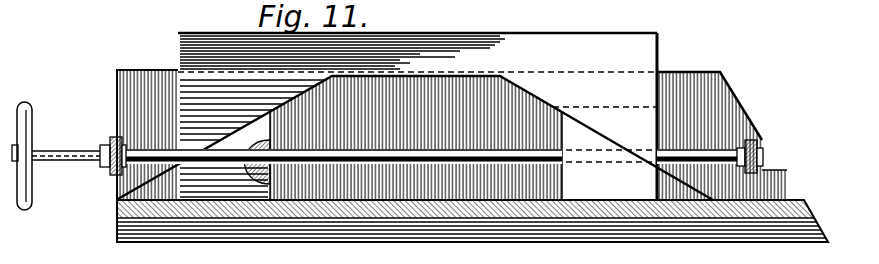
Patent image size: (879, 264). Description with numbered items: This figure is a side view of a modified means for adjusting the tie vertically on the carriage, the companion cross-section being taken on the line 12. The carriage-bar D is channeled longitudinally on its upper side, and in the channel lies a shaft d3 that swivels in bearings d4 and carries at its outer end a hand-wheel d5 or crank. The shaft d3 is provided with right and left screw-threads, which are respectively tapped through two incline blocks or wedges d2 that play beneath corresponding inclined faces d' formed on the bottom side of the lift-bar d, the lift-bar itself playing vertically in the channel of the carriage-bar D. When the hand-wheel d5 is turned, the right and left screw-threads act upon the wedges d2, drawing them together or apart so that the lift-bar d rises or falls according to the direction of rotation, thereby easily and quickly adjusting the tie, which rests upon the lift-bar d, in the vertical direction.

The section line 12 is at (164, 70).
The carriage-bar D is at (682, 85).
The lift-bar d is at (417, 52).
The inclined faces d' is at (418, 109).
The incline blocks or wedges d2 is at (418, 173).
The shaft d3 is at (428, 152).
The bearings d4 is at (779, 137).
The hand-wheel d5 is at (28, 105).